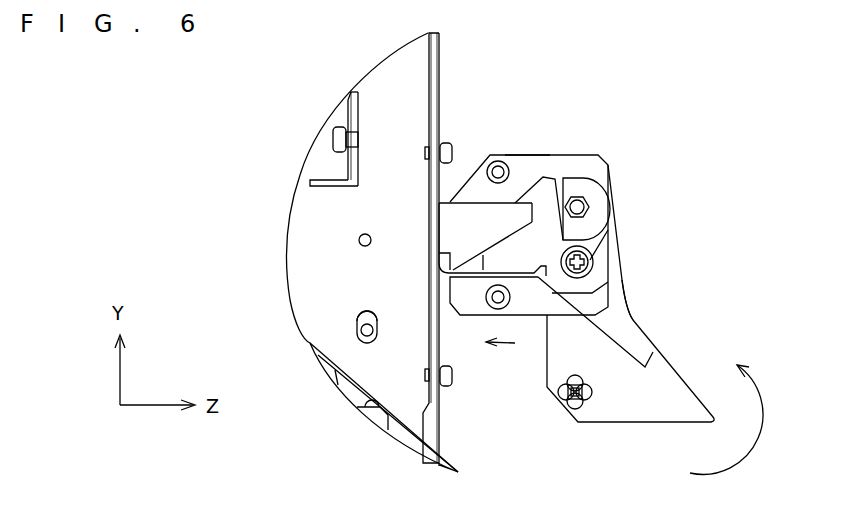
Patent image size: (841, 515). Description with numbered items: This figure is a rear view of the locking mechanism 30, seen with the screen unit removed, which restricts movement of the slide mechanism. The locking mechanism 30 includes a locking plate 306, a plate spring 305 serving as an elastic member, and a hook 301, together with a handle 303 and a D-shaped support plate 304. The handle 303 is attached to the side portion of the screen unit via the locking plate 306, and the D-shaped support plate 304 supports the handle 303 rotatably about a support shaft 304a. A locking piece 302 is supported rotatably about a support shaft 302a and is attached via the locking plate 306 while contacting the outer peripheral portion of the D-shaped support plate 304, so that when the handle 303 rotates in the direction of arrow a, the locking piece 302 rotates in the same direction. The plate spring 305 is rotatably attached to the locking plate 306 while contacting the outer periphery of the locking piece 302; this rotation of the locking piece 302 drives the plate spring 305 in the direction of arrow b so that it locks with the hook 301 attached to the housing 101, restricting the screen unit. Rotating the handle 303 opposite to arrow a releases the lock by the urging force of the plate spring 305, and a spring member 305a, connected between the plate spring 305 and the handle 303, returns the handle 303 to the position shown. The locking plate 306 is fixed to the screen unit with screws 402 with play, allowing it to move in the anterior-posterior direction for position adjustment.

The locking mechanism 30 is at (645, 95).
The housing 101 is at (440, 42).
The hook 301 is at (478, 200).
The locking piece 302 is at (550, 179).
The support shaft 302a is at (592, 265).
The handle 303 is at (619, 400).
The D-shaped support plate 304 is at (598, 202).
The support shaft 304a is at (582, 195).
The plate spring 305 is at (485, 272).
The spring member 305a is at (613, 337).
The locking plate 306 is at (528, 156).
The screws 402 is at (495, 160).
The arrow a is at (762, 457).
The arrow b is at (515, 345).